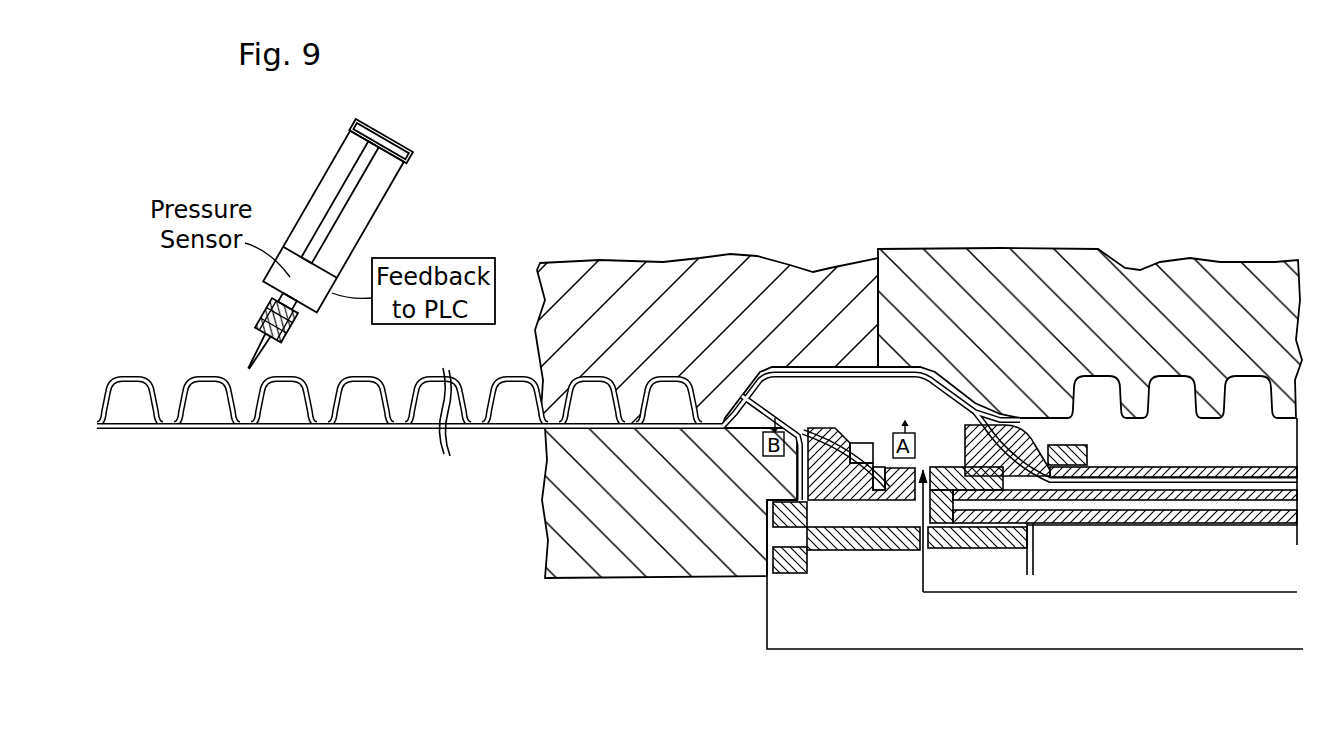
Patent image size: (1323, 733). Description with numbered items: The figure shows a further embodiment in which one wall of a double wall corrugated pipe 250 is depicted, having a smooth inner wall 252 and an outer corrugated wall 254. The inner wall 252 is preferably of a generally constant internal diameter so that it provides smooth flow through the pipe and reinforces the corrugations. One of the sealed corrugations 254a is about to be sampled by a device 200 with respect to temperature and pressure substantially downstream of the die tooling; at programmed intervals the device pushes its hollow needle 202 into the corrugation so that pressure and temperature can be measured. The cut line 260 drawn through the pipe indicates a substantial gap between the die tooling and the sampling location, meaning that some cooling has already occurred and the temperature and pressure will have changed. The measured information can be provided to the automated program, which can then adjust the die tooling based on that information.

The device 200 is at (396, 217).
The hollow needle 202 is at (259, 356).
The double wall corrugated pipe 250 is at (697, 434).
The inner wall 252 is at (281, 432).
The outer corrugated wall 254 is at (318, 379).
The sealed corrugation 254a is at (198, 377).
The cut line 260 is at (462, 452).